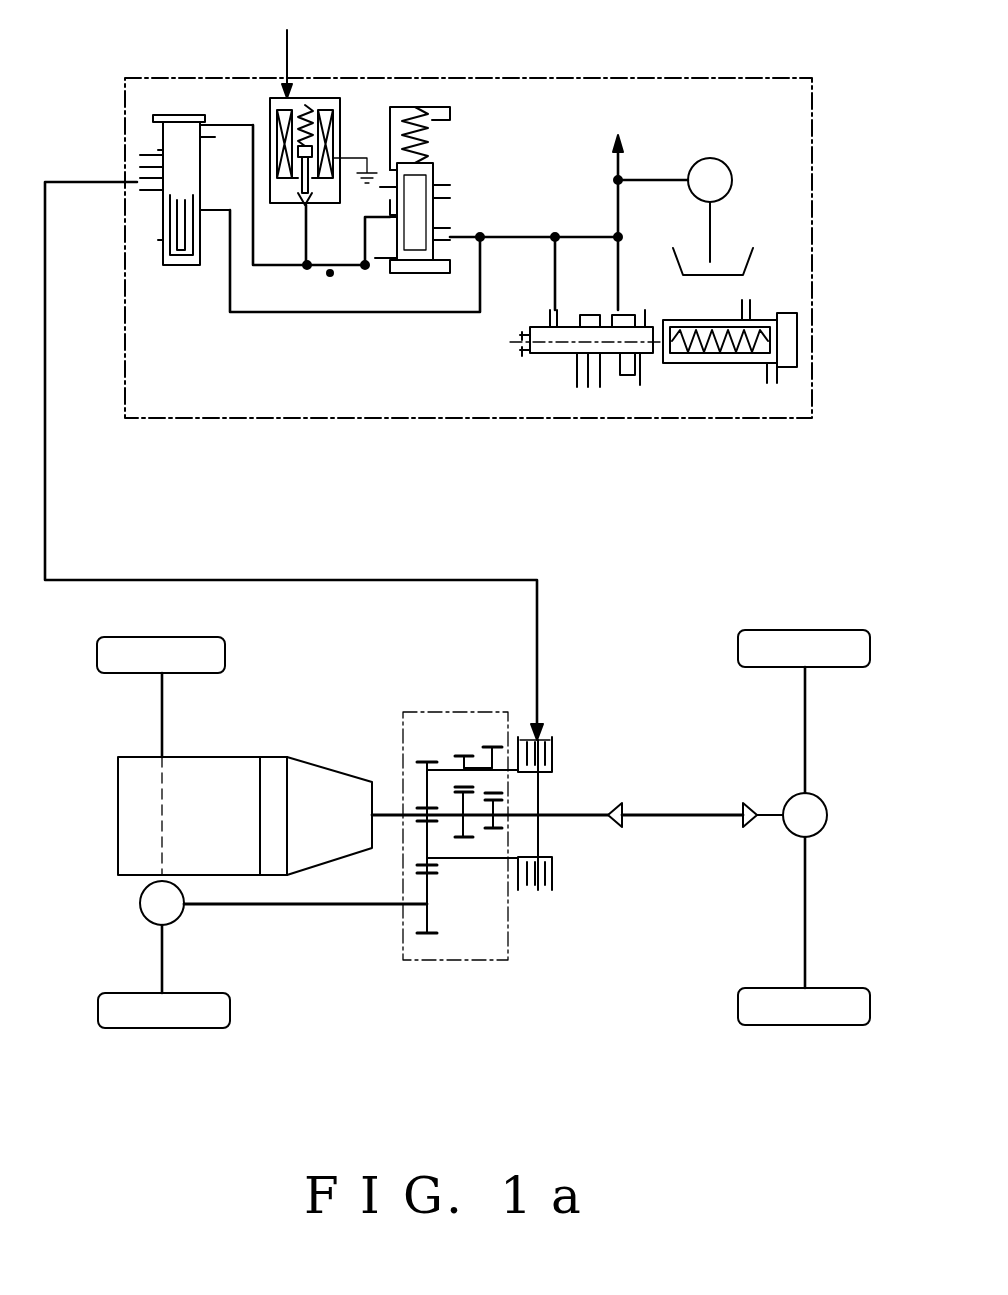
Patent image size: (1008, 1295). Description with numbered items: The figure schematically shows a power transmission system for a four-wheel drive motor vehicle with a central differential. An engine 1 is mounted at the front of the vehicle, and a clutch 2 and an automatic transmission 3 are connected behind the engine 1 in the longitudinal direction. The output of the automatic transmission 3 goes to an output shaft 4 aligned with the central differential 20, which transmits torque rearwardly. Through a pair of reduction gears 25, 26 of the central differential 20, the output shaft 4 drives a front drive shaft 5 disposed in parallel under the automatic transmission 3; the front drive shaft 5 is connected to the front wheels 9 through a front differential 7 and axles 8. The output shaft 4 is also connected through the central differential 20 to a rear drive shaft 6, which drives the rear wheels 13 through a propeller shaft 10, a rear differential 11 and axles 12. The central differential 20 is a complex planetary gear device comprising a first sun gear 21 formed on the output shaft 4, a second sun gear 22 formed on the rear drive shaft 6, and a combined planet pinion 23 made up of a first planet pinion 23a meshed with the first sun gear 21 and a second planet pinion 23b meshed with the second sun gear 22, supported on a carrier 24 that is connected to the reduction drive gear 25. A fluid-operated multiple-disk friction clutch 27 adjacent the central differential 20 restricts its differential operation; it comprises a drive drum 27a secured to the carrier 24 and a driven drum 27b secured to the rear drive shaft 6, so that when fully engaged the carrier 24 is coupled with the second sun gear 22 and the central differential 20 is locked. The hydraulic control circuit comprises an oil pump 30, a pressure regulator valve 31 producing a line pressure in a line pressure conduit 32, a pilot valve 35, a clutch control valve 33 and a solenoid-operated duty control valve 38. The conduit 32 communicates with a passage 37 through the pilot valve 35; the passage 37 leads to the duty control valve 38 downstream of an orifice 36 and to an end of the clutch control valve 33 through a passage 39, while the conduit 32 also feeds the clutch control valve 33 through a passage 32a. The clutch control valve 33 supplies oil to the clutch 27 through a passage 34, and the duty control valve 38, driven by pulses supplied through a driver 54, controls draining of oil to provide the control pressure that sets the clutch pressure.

The engine 1 is at (116, 792).
The clutch 2 is at (275, 757).
The automatic transmission 3 is at (312, 762).
The output shaft 4 is at (392, 815).
The front drive shaft 5 is at (277, 904).
The rear drive shaft 6 is at (612, 828).
The front differential 7 is at (140, 903).
The axles 8 is at (160, 713).
The front wheels 9 is at (160, 637).
The propeller shaft 10 is at (670, 815).
The rear differential 11 is at (823, 822).
The axles 12 is at (806, 902).
The rear wheels 13 is at (855, 667).
The central differential 20 is at (447, 972).
The first sun gear 21 is at (462, 842).
The second sun gear 22 is at (492, 832).
The combined planet pinion 23 is at (477, 762).
The first planet pinion 23a is at (462, 754).
The second planet pinion 23b is at (490, 750).
The carrier 24 is at (430, 805).
The reduction drive gear 25 is at (417, 762).
The reduction gear 26 is at (417, 933).
The fluid-operated multiple-disk friction clutch 27 is at (570, 750).
The drive drum 27a is at (554, 740).
The driven drum 27b is at (540, 790).
The oil pump 30 is at (732, 195).
The pressure regulator valve 31 is at (652, 308).
The line pressure conduit 32 is at (515, 237).
The passage 32a is at (262, 312).
The clutch control valve 33 is at (200, 115).
The passage 34 is at (90, 180).
The pilot valve 35 is at (438, 150).
The orifice 36 is at (326, 262).
The passage 37 is at (345, 268).
The solenoid-operated duty control valve 38 is at (325, 98).
The passage 39 is at (290, 265).
The driver 54 is at (284, 49).